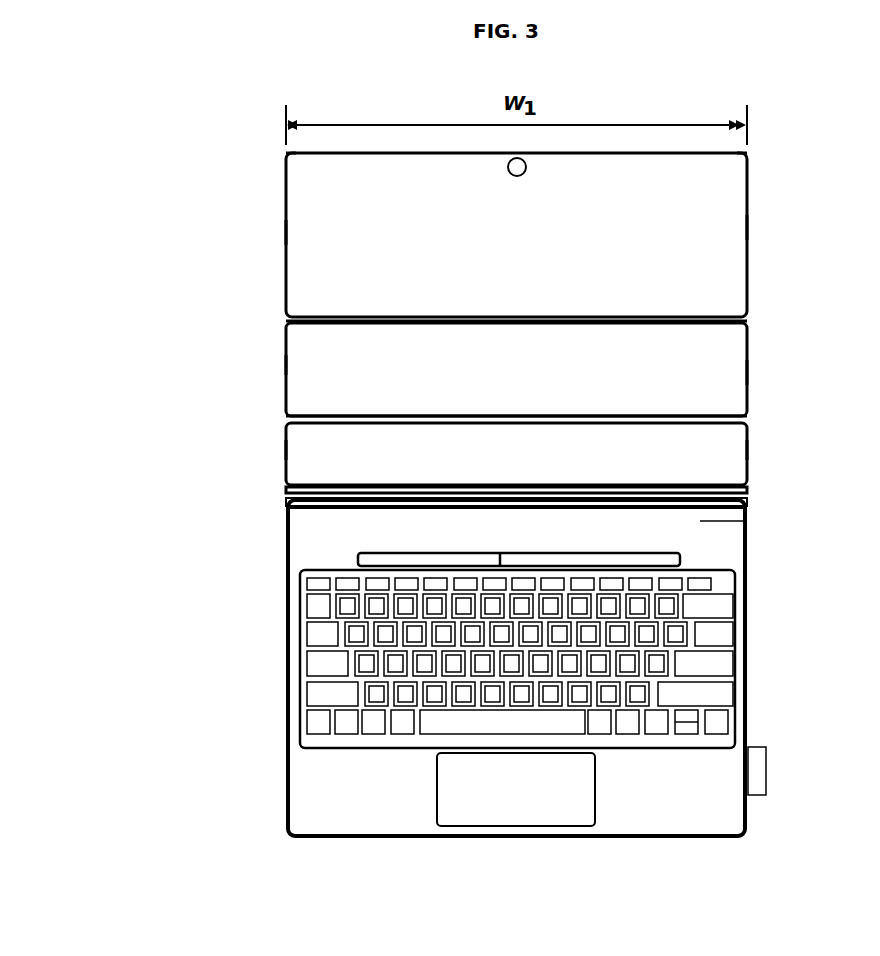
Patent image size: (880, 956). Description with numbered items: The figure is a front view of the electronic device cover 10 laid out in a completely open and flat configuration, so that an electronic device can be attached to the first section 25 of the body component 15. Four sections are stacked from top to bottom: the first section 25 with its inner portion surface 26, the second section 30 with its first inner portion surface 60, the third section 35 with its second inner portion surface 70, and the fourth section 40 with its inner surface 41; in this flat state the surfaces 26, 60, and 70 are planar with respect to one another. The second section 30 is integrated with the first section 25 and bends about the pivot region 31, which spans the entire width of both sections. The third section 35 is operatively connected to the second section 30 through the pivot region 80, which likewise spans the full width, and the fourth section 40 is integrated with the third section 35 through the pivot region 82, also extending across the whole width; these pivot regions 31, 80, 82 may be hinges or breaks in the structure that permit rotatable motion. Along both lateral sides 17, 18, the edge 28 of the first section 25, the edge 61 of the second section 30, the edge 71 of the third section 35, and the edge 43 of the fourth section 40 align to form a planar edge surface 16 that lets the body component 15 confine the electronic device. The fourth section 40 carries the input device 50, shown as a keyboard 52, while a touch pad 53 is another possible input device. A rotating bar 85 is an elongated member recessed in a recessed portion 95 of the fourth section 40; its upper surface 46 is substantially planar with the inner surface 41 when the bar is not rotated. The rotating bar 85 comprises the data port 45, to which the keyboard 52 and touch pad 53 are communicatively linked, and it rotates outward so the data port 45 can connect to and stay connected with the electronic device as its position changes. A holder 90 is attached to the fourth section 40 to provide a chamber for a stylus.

The electronic device cover 10 is at (110, 348).
The body component 15 is at (278, 262).
The planar edge surface 16 is at (286, 520).
The lateral side 17 is at (277, 172).
The lateral side 18 is at (758, 167).
The first section 25 is at (747, 228).
The inner portion surface 26 is at (516, 235).
The edge 28 is at (286, 233).
The second section 30 is at (747, 375).
The pivot region 31 is at (742, 319).
The third section 35 is at (747, 452).
The fourth section 40 is at (745, 608).
The inner surface 41 is at (516, 526).
The edge 43 is at (425, 659).
The data port 45 is at (732, 521).
The upper surface 46 is at (742, 556).
The input device 50 is at (400, 808).
The keyboard 52 is at (355, 660).
The touch pad 53 is at (505, 805).
The first inner portion surface 60 is at (516, 369).
The edge 61 is at (286, 358).
The second inner portion surface 70 is at (516, 454).
The edge 71 is at (286, 455).
The pivot region 80 is at (742, 418).
The pivot region 82 is at (742, 493).
The rotating bar 85 is at (430, 553).
The holder 90 is at (766, 779).
The recessed portion 95 is at (660, 553).